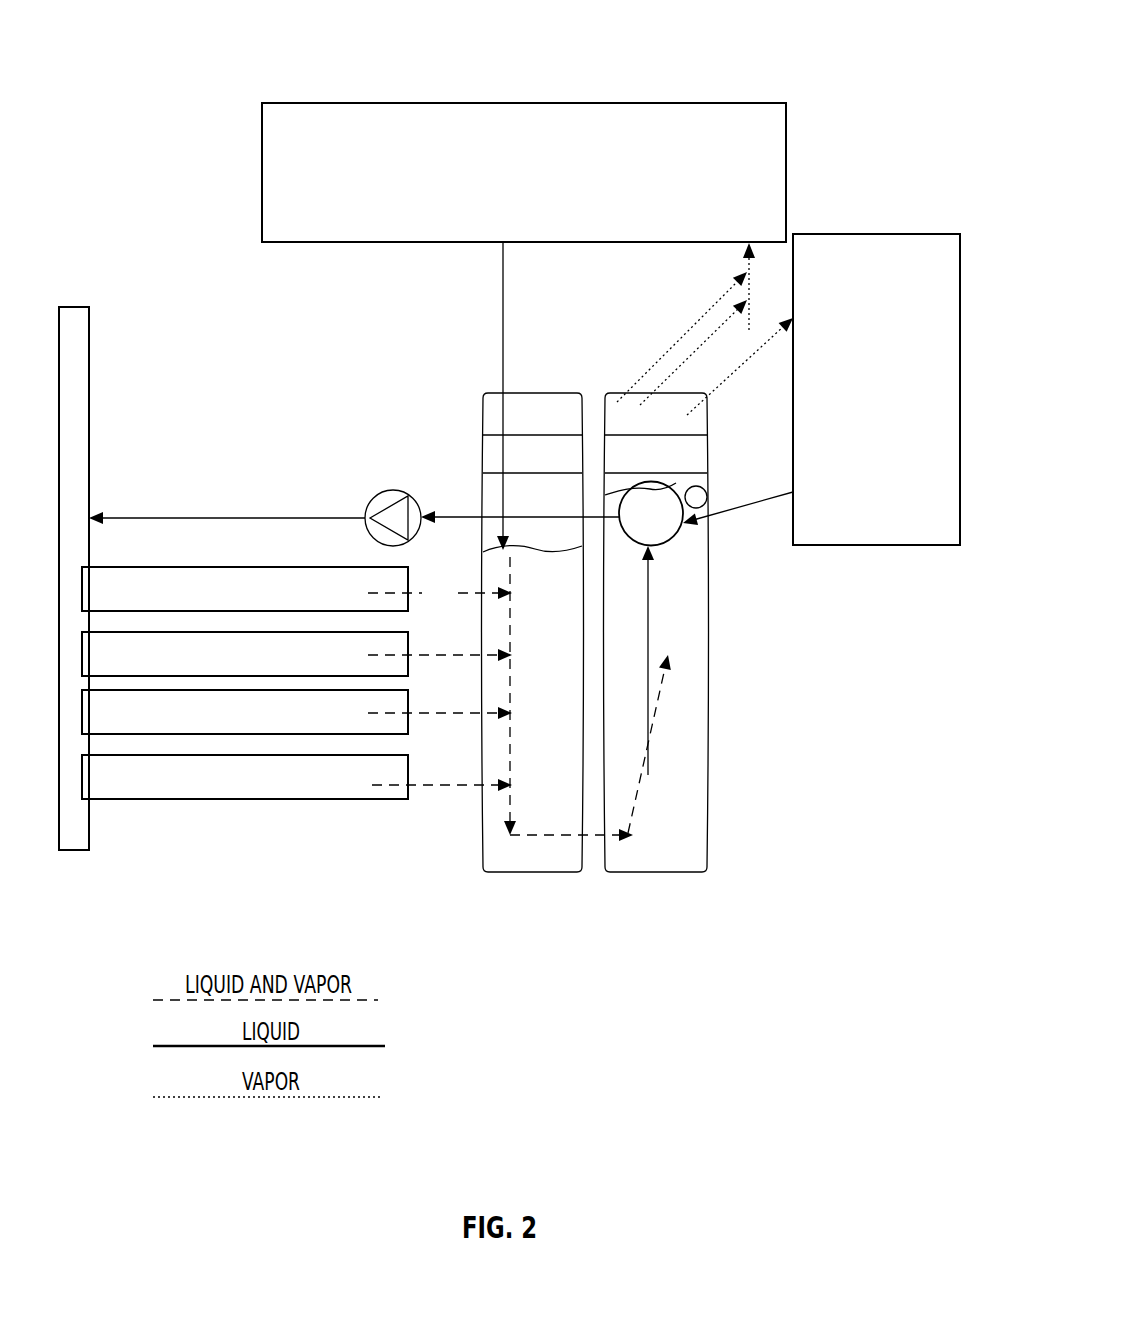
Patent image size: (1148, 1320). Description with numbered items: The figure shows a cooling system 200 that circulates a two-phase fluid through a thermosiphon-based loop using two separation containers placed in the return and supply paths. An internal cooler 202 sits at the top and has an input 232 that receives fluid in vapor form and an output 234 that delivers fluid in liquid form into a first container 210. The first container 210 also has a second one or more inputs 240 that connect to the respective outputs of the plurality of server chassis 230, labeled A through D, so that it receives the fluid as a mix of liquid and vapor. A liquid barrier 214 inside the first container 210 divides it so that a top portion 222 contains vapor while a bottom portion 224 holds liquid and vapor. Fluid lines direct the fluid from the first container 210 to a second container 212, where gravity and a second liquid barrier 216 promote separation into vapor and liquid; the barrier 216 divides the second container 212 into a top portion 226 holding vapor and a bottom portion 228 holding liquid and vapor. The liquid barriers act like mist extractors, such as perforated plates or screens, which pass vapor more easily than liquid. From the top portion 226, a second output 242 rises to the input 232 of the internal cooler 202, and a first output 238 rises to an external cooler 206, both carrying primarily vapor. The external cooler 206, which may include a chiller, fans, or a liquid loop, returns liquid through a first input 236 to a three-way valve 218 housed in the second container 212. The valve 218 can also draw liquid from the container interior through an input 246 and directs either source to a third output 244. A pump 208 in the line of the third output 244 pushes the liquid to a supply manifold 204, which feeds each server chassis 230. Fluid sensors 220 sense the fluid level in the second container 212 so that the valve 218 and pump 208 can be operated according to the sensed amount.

The cooling system 200 is at (750, 58).
The internal cooler 202 is at (623, 186).
The supply manifold 204 is at (89, 294).
The external cooler 206 is at (930, 419).
The pump 208 is at (397, 490).
The first container 210 is at (548, 919).
The second container 212 is at (672, 919).
The liquid barrier 214 is at (548, 471).
The liquid barrier 216 is at (672, 471).
The three-way valve 218 is at (668, 529).
The fluid sensors 220 is at (702, 488).
The top portion 222 is at (515, 423).
The bottom portion 224 is at (515, 497).
The top portion 226 is at (638, 417).
The bottom portion 228 is at (678, 787).
The server chassis 230 is at (318, 864).
The input 232 is at (736, 266).
The output 234 is at (532, 380).
The first input 236 is at (738, 524).
The first output 238 is at (753, 382).
The second one or more inputs 240 is at (455, 607).
The second output 242 is at (700, 352).
The third output 244 is at (539, 534).
The input 246 is at (663, 676).